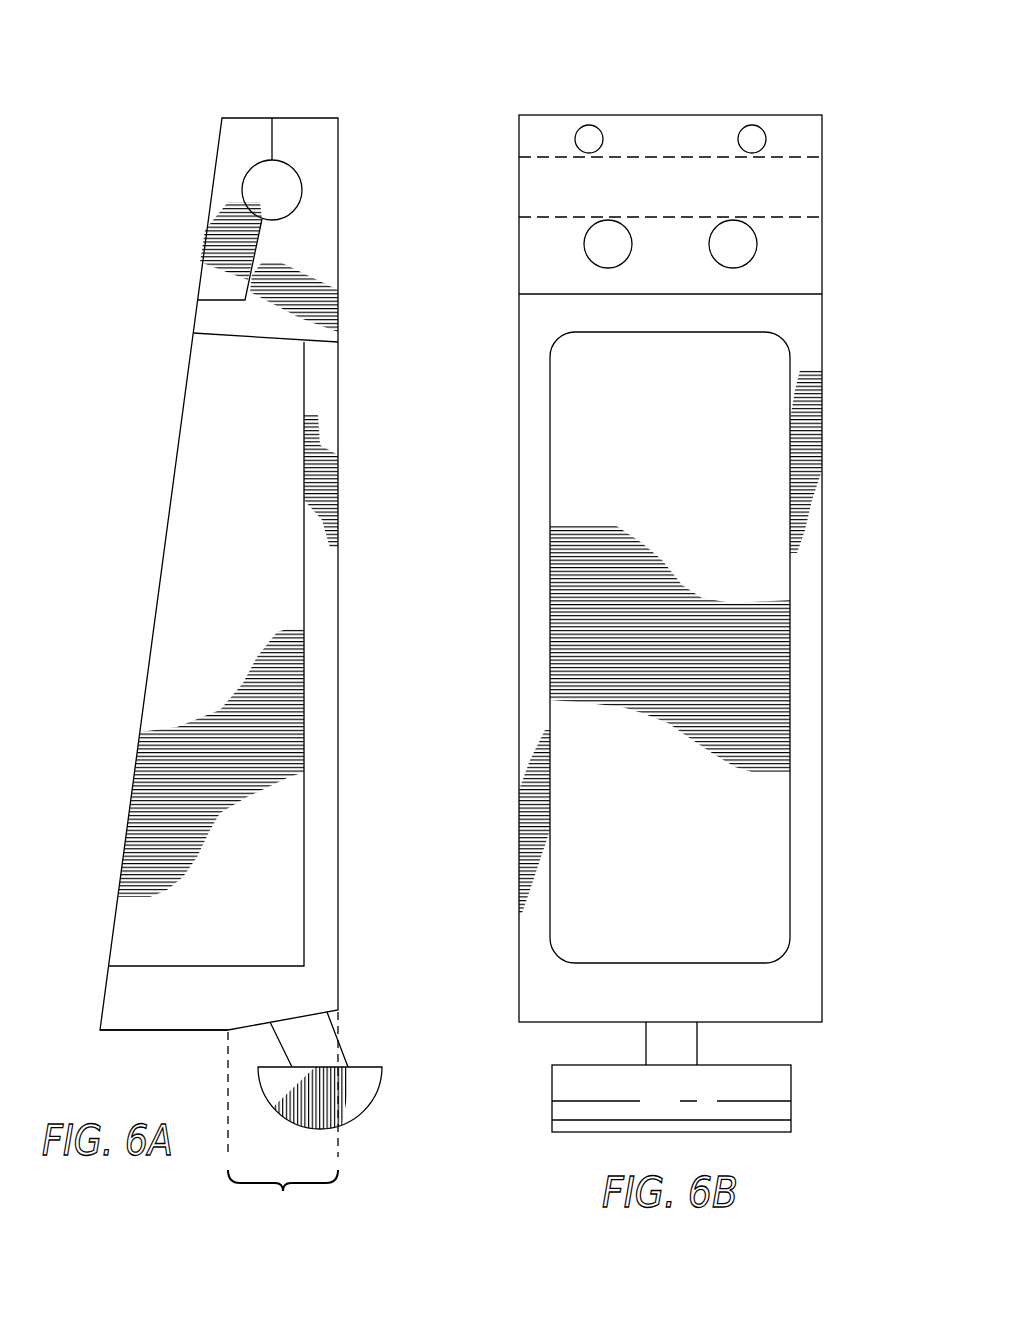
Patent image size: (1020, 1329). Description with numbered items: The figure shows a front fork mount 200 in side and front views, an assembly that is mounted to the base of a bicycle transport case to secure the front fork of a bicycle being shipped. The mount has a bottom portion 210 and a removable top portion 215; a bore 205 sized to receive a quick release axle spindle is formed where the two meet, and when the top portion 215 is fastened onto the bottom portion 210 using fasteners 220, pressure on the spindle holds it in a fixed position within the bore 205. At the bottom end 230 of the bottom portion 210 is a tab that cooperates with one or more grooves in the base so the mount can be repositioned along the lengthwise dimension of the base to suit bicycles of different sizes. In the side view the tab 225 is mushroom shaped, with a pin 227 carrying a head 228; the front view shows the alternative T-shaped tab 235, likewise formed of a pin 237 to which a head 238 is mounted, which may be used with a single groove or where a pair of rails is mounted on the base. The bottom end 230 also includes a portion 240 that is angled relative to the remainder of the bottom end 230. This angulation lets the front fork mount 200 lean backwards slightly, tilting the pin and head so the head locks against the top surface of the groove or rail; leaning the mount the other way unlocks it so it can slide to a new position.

In FIG. 6A, the front fork mount 200 is at (236, 84).
In FIG. 6A, the bore 205 is at (282, 190).
In FIG. 6B, the bore 205 is at (812, 187).
In FIG. 6A, the bottom portion 210 is at (338, 627).
In FIG. 6B, the bottom portion 210 is at (822, 553).
In FIG. 6A, the top portion 215 is at (200, 233).
In FIG. 6B, the top portion 215 is at (822, 268).
In FIG. 6B, the fasteners 220 is at (589, 125).
In FIG. 6A, the tab 225 is at (365, 1092).
In FIG. 6A, the pin 227 is at (320, 1049).
In FIG. 6A, the head 228 is at (277, 1108).
In FIG. 6A, the bottom end 230 is at (137, 1031).
In FIG. 6B, the T-shaped tab 235 is at (791, 1092).
In FIG. 6B, the pin 237 is at (697, 1043).
In FIG. 6B, the head 238 is at (768, 1132).
In FIG. 6A, the angled portion 240 is at (283, 1117).